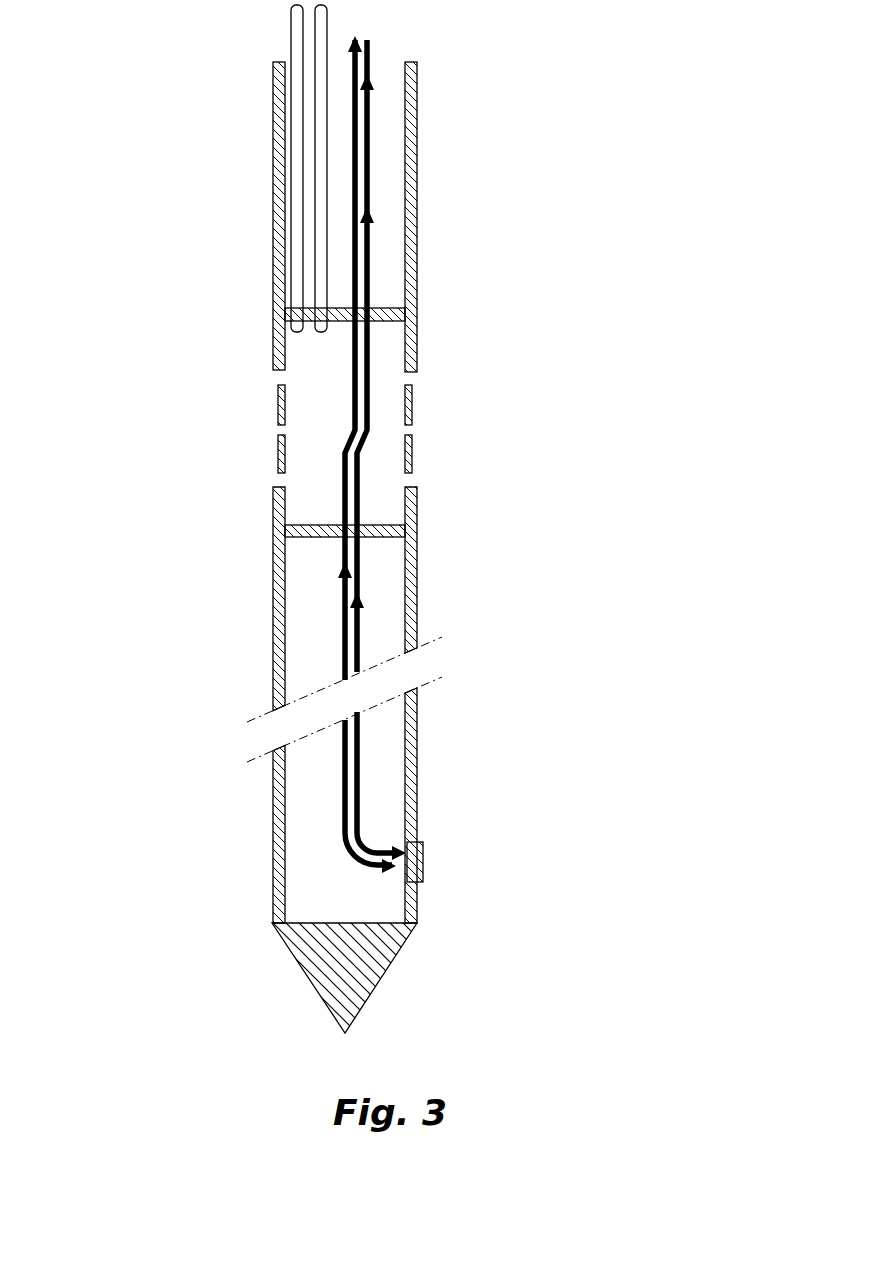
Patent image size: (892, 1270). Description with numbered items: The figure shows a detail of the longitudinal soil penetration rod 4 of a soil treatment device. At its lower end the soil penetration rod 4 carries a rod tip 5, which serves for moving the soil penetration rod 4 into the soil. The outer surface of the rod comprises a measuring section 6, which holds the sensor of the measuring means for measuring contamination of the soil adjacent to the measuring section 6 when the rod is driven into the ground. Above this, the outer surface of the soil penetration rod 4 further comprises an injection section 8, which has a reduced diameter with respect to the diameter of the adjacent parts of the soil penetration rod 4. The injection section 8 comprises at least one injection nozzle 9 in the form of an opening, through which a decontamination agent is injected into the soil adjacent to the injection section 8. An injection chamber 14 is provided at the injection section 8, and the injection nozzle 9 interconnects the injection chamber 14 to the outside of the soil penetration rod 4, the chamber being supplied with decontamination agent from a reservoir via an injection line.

The soil penetration rod 4 is at (492, 165).
The rod tip 5 is at (445, 988).
The measuring section 6 is at (445, 857).
The injection section 8 is at (445, 410).
The injection nozzle 9 is at (275, 480).
The injection chamber 14 is at (312, 362).